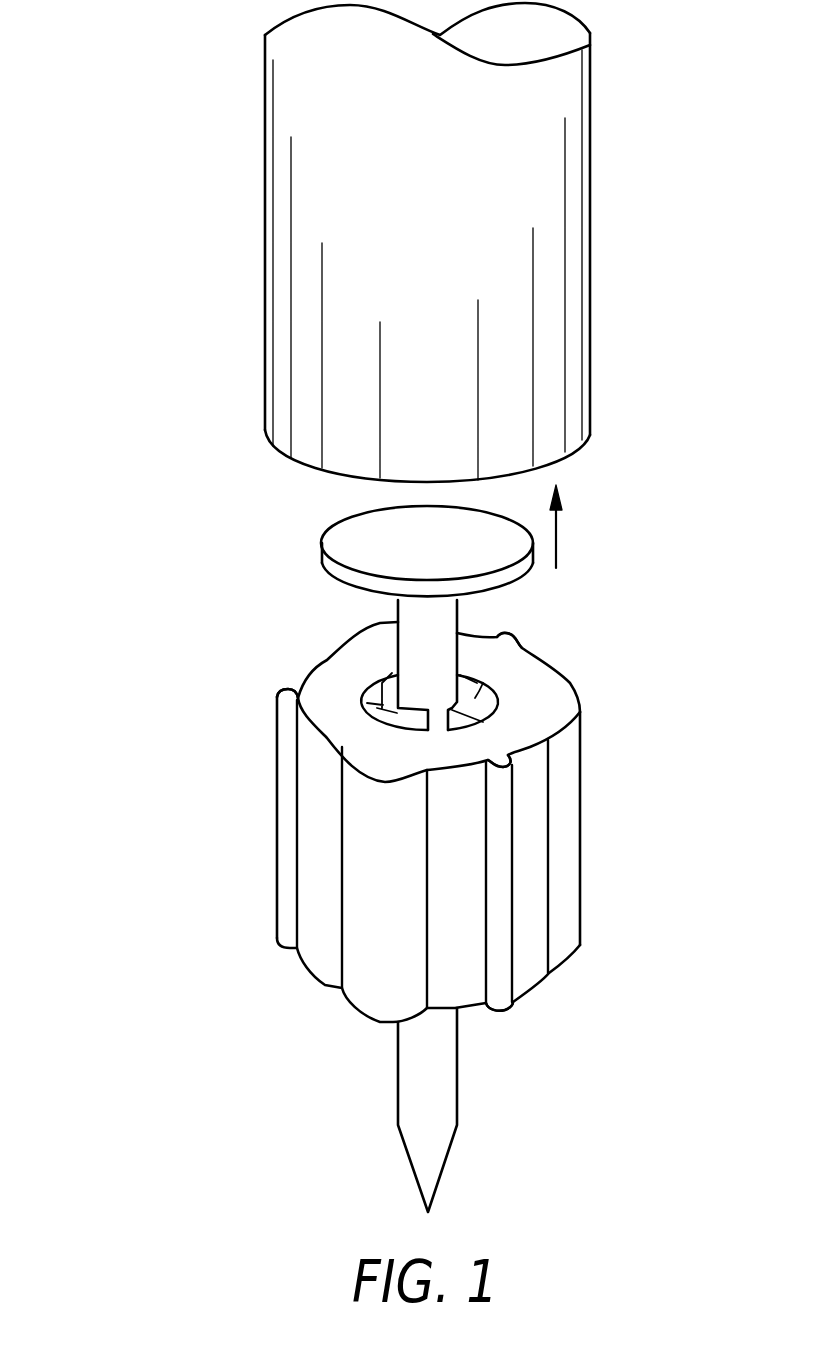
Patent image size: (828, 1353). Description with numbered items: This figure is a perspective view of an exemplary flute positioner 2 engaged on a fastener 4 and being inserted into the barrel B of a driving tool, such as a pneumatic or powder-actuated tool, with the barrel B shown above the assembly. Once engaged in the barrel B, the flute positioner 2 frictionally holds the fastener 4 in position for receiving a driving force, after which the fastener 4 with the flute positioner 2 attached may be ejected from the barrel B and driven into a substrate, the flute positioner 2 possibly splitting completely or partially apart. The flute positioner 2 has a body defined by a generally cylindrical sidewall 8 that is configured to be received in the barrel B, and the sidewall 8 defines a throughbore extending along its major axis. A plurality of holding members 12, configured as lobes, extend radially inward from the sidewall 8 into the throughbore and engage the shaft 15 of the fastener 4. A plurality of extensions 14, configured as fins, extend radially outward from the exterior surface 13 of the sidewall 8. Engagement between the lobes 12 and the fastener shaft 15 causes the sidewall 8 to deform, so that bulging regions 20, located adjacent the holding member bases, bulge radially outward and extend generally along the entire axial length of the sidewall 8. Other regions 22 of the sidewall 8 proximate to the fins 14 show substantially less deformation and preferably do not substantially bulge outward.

The barrel B is at (590, 230).
The flute positioner 2 is at (176, 810).
The fastener 4 is at (322, 553).
The sidewall 8 is at (517, 717).
The holding members 12 is at (363, 703).
The exterior surface 13 is at (313, 903).
The extensions 14 is at (278, 845).
The fastener shaft 15 is at (430, 1080).
The bulging regions 20 is at (363, 947).
The sidewall regions 22 is at (303, 675).